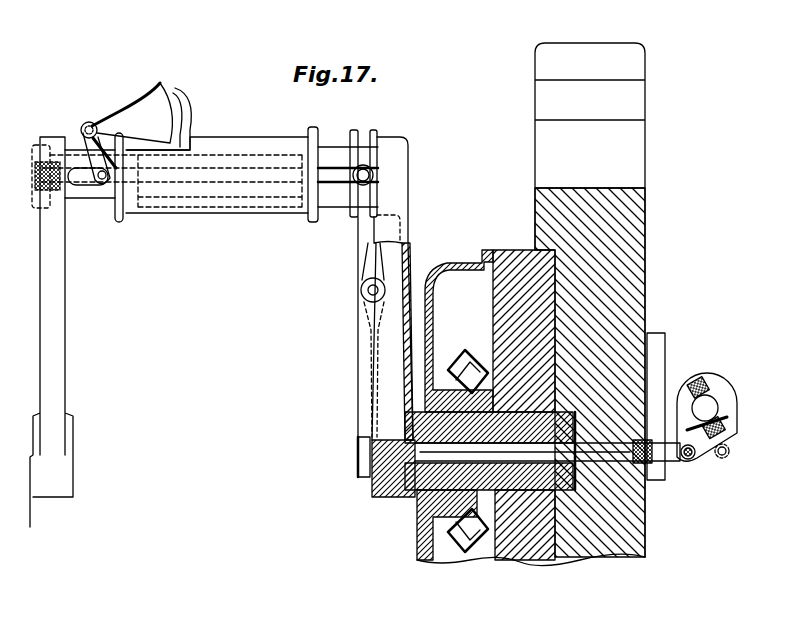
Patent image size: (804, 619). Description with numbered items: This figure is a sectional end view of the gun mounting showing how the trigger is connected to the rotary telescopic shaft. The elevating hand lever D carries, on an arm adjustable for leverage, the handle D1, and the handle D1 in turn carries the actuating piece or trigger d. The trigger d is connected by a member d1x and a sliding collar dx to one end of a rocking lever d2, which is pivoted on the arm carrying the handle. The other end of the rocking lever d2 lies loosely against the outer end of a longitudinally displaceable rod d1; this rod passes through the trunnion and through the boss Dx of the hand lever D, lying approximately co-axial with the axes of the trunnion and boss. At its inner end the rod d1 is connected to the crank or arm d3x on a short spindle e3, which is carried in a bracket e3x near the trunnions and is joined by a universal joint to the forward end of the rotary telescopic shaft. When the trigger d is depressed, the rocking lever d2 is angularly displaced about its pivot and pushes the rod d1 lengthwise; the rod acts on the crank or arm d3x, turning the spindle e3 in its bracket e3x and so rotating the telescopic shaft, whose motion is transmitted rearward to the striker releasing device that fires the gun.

The elevating hand lever D is at (57, 395).
The handle D1 is at (282, 118).
The trigger d is at (150, 120).
The member d1x is at (335, 172).
The sliding collar dx is at (357, 137).
The rocking lever d2 is at (363, 320).
The boss Dx is at (372, 483).
The longitudinally displaceable rod d1 is at (627, 487).
The bracket e3x is at (645, 372).
The short spindle e3 is at (702, 408).
The crank or arm d3x is at (697, 440).